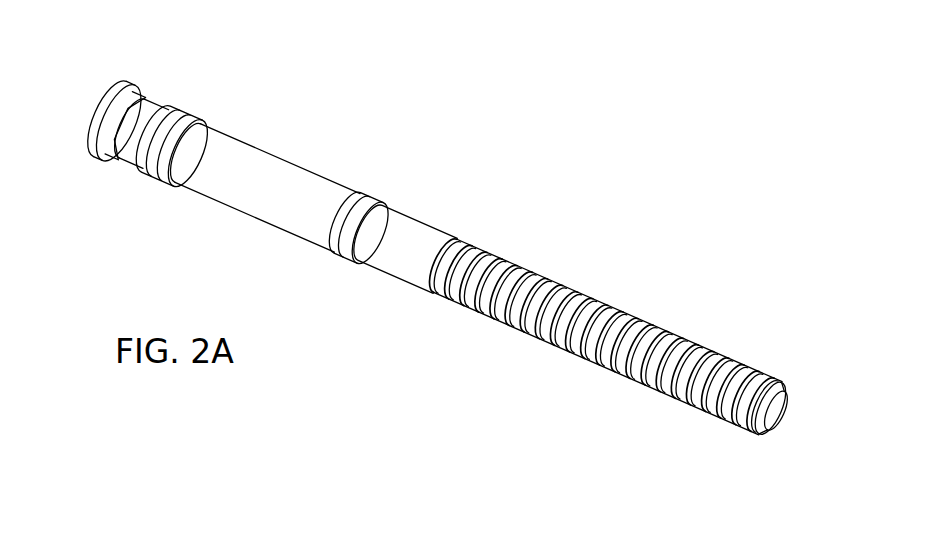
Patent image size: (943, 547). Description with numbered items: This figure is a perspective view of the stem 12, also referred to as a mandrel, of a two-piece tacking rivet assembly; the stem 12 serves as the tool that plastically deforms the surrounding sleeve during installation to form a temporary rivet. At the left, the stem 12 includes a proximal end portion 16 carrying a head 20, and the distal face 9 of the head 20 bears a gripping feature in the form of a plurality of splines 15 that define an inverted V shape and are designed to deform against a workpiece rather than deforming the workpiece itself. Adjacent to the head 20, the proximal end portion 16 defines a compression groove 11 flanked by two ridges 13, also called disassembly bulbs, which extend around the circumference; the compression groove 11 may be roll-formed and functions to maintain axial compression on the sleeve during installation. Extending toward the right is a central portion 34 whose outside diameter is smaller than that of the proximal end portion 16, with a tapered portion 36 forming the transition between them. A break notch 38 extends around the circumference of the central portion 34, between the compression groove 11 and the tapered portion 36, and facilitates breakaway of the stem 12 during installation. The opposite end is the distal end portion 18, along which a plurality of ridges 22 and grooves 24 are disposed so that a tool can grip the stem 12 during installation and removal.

The stem 12 is at (337, 80).
The head 20 is at (122, 83).
The splines 15 is at (139, 96).
The compression groove 11 is at (186, 110).
The distal face 9 is at (117, 163).
The proximal end portion 16 is at (128, 180).
The ridges 13 is at (177, 181).
The tapered portion 36 is at (390, 200).
The break notch 38 is at (345, 253).
The central portion 34 is at (393, 292).
The ridges 22 is at (683, 340).
The grooves 24 is at (598, 363).
The distal end portion 18 is at (725, 440).